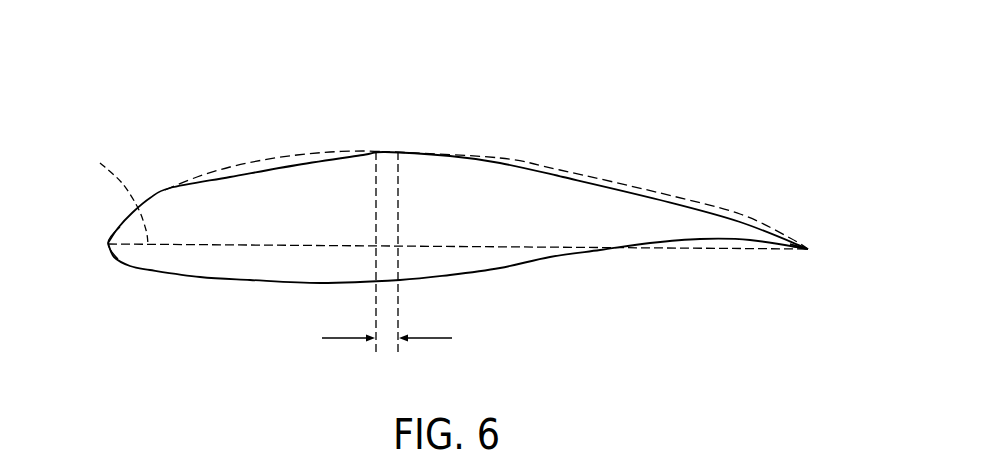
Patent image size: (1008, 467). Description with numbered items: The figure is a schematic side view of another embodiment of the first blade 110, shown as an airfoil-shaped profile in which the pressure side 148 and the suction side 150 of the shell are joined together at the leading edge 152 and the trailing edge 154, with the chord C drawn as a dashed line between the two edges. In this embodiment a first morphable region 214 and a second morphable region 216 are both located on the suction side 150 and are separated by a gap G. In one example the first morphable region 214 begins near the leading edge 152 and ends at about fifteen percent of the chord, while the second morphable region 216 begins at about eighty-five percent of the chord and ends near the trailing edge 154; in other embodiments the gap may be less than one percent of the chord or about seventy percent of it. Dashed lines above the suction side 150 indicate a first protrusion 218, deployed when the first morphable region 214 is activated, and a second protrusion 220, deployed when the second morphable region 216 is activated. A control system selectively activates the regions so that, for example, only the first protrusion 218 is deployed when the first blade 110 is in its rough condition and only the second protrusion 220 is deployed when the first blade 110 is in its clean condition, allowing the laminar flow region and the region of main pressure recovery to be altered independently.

The first blade 110 is at (152, 64).
The pressure side 148 is at (578, 255).
The suction side 150 is at (749, 222).
The leading edge 152 is at (106, 243).
The trailing edge 154 is at (810, 249).
The first morphable region 214 is at (223, 152).
The second morphable region 216 is at (540, 136).
The first protrusion 218 is at (248, 162).
The second protrusion 220 is at (613, 178).